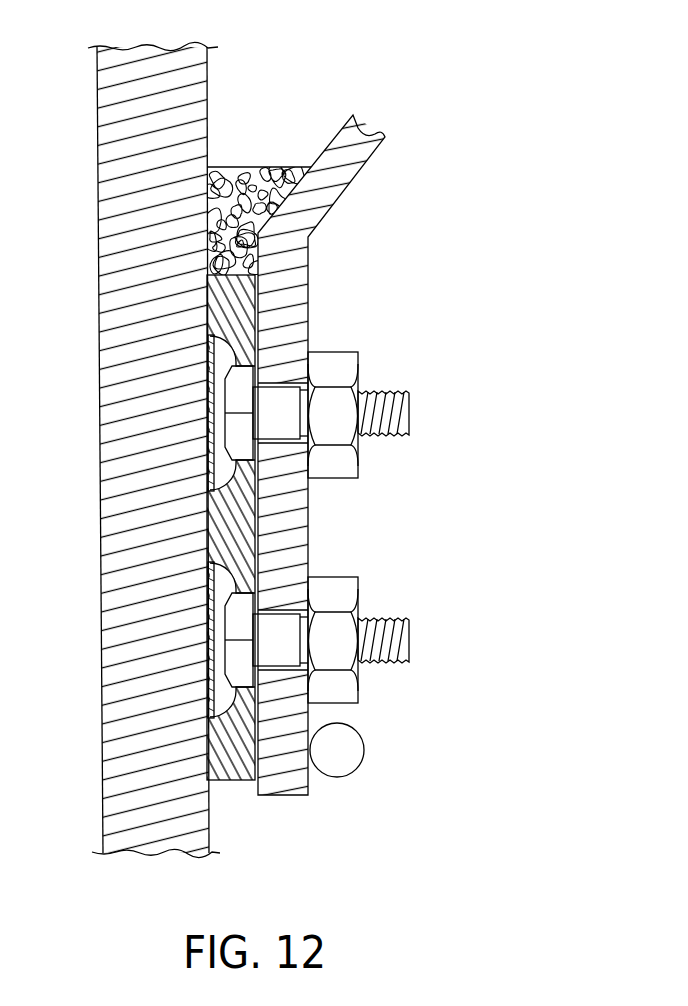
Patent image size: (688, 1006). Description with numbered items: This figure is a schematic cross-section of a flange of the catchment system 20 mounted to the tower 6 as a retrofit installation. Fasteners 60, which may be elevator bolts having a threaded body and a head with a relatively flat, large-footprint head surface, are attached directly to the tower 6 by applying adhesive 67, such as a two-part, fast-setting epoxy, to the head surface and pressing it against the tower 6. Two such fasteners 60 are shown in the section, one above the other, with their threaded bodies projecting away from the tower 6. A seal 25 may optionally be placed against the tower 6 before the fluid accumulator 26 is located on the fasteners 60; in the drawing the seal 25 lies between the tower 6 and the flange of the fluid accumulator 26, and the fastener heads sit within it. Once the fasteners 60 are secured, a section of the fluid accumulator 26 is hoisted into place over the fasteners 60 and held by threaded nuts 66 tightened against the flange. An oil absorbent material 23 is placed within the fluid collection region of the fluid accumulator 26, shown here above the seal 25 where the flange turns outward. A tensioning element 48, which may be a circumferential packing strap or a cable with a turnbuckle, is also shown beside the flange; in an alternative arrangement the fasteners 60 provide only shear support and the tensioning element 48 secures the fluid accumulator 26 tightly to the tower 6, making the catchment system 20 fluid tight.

The tower 6 is at (108, 448).
The catchment system 20 is at (390, 246).
The oil absorbent material 23 is at (263, 183).
The seal 25 is at (232, 774).
The fluid accumulator 26 is at (326, 149).
The tensioning element 48 is at (357, 750).
The fastener 60 is at (409, 413).
The threaded nut 66 is at (332, 358).
The adhesive 67 is at (208, 413).